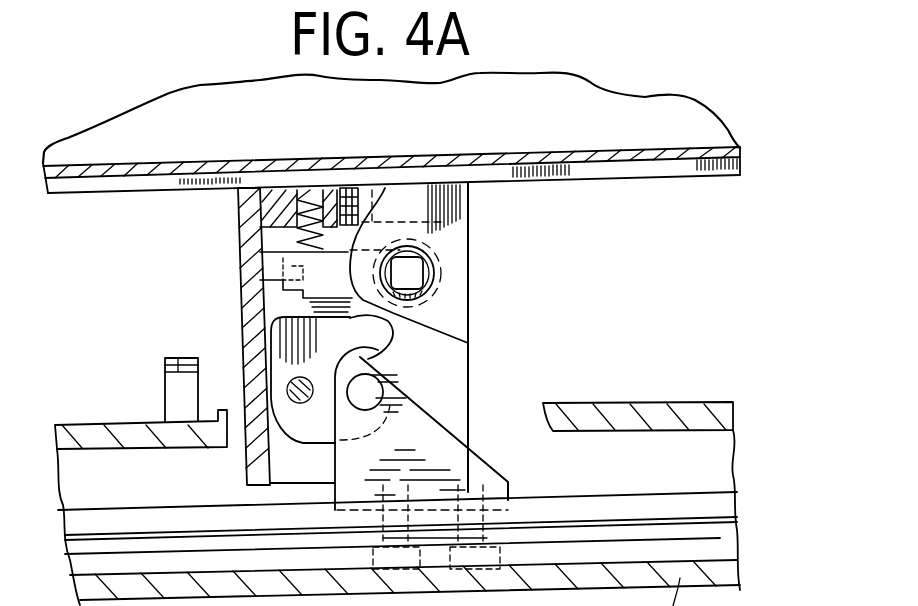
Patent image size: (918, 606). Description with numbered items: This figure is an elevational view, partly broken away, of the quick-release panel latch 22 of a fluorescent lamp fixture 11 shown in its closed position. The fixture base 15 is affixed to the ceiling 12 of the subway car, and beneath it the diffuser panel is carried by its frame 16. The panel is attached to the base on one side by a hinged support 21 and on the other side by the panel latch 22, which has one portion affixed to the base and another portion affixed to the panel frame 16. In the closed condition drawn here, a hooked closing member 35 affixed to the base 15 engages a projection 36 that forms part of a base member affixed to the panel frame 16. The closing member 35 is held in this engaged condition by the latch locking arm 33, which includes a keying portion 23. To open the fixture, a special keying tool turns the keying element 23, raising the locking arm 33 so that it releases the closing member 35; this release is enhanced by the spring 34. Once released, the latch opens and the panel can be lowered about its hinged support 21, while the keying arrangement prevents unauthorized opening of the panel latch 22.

The fluorescent lamp fixture 11 is at (745, 478).
The ceiling 12 is at (732, 112).
The fixture base 15 is at (676, 172).
The frame 16 is at (738, 572).
The hinged support 21 is at (166, 371).
The panel latch 22 is at (483, 314).
The keying portion 23 is at (413, 277).
The latch locking arm 33 is at (262, 288).
The spring 34 is at (260, 258).
The hooked closing member 35 is at (373, 343).
The projection 36 is at (368, 389).